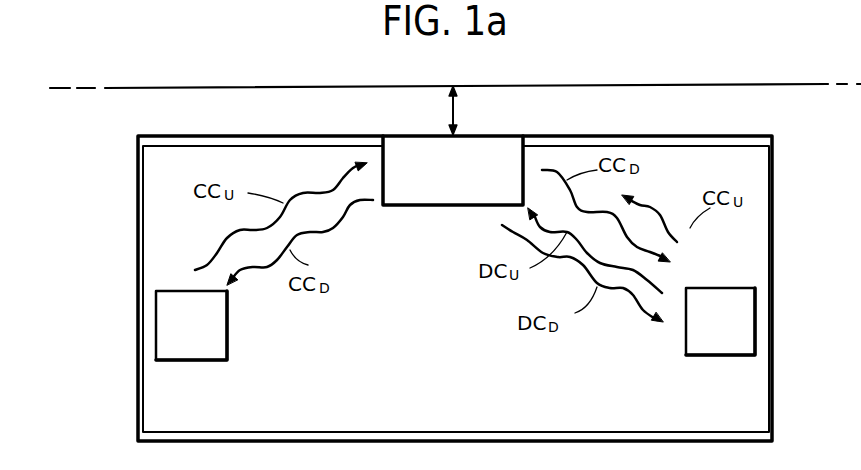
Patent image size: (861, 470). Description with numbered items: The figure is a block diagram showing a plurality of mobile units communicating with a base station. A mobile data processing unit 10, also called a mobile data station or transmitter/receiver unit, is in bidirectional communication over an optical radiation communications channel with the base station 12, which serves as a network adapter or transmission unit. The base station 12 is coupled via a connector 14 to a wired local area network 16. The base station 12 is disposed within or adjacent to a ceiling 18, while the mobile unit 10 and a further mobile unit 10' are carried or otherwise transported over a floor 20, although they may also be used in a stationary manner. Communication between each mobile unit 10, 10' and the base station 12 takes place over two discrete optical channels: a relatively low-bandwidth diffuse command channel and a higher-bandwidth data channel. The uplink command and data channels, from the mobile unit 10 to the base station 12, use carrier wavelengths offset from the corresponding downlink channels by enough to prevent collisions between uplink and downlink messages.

The wired local area network (LAN) 16 is at (332, 87).
The connector 14 is at (452, 113).
The base station 12 is at (490, 135).
The ceiling 18 is at (737, 133).
The floor 20 is at (423, 431).
The mobile data processing unit 10 is at (676, 351).
The second mobile data processing unit 10' is at (218, 328).